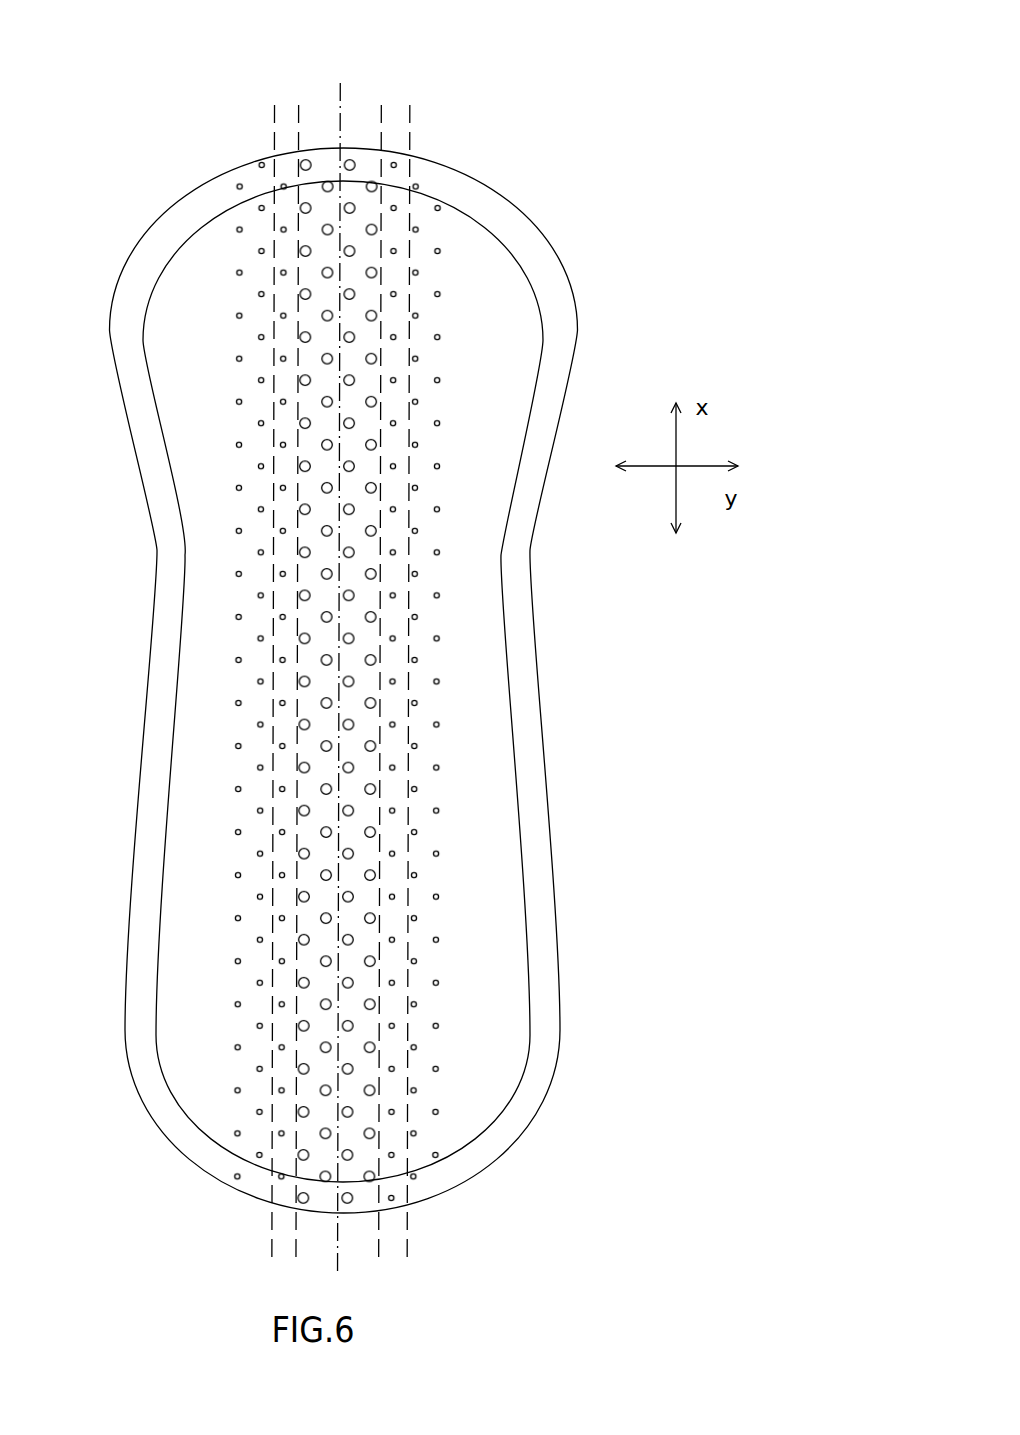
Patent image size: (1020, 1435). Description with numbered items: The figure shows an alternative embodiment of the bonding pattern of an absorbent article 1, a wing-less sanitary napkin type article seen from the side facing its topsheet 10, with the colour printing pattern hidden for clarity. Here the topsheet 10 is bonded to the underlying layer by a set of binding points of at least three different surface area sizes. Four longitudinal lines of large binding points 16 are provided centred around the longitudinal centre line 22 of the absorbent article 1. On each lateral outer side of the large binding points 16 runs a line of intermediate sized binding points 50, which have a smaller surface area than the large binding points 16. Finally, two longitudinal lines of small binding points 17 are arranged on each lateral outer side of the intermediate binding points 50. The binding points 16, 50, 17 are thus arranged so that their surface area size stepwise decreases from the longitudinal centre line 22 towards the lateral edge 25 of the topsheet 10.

The absorbent article 1 is at (719, 62).
The topsheet 10 is at (491, 689).
The large binding points 16 is at (328, 187).
The small binding points 17 is at (240, 230).
The longitudinal centre line 22 is at (340, 98).
The lateral edge 25 is at (543, 748).
The intermediate sized binding points 50 is at (283, 187).